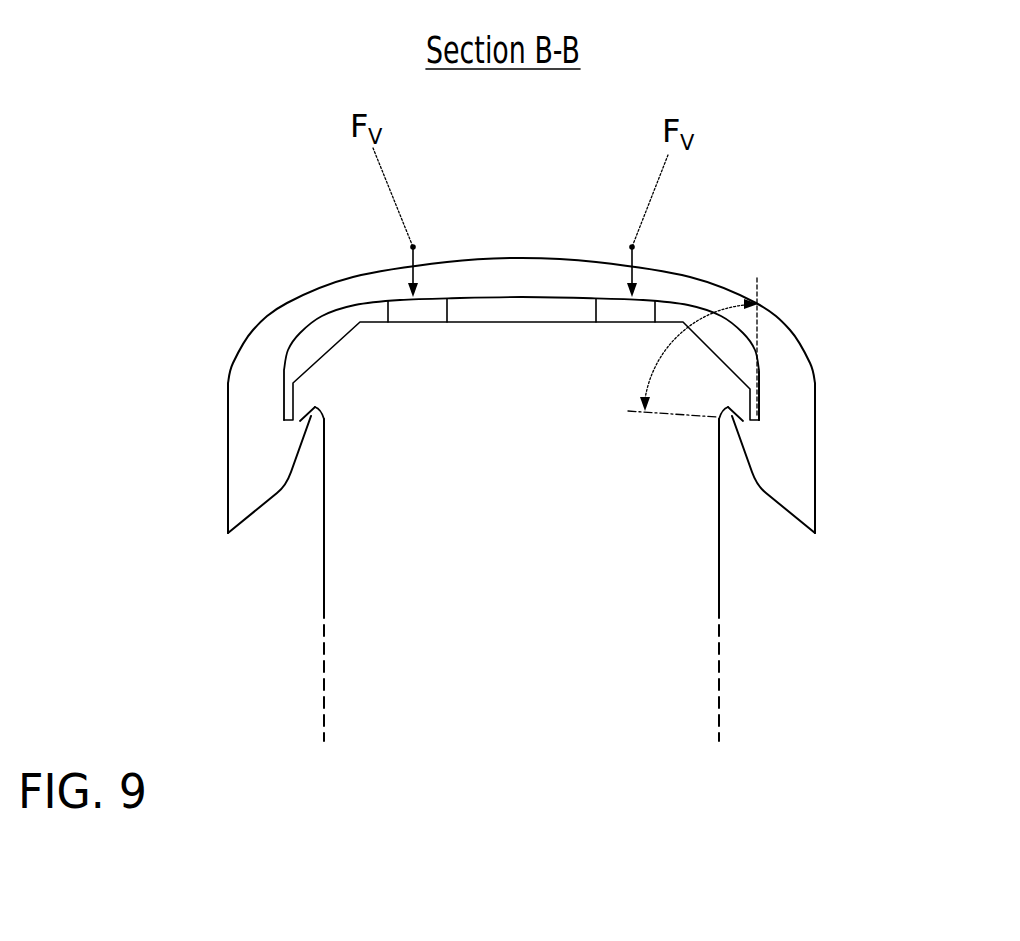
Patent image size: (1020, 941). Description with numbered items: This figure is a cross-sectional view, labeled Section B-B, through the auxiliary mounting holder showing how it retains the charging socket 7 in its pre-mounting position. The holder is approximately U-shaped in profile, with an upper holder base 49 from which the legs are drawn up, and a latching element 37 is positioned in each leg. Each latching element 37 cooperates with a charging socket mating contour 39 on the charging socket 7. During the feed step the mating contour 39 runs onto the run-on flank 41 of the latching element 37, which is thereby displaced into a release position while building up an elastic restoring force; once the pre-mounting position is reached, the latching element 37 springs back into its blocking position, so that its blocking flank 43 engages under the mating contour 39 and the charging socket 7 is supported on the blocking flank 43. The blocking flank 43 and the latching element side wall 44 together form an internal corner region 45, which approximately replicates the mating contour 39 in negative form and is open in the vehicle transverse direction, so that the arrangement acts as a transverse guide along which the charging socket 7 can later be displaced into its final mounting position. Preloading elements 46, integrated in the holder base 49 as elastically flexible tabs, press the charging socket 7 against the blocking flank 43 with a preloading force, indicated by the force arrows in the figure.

The charging socket 7 is at (738, 585).
The latching element 37 is at (875, 494).
The charging socket mating contour 39 is at (315, 406).
The run-on flank 41 is at (297, 458).
The blocking flank 43 is at (300, 421).
The latching element side wall 44 is at (757, 399).
The internal corner region 45 is at (660, 362).
The preloading element 46 is at (437, 308).
The holder base 49 is at (525, 275).